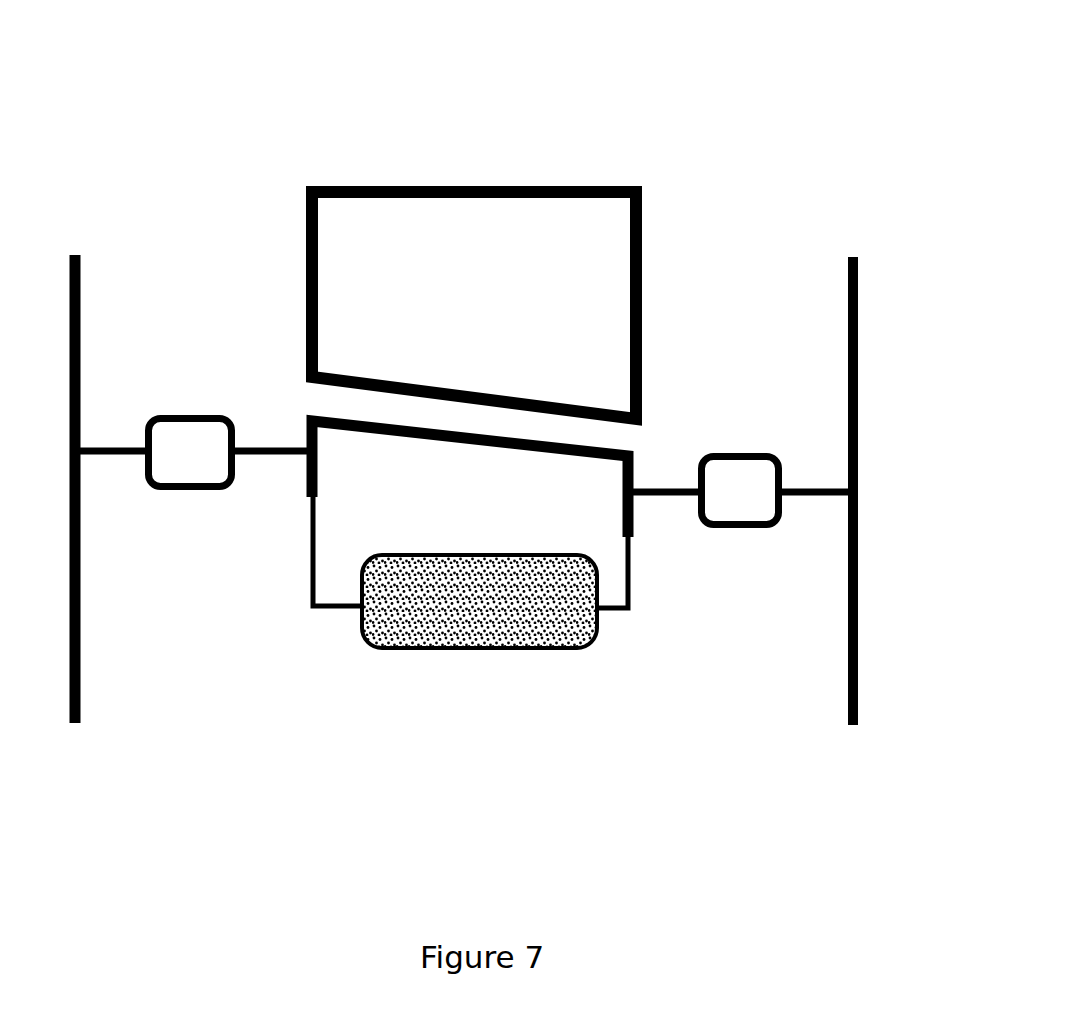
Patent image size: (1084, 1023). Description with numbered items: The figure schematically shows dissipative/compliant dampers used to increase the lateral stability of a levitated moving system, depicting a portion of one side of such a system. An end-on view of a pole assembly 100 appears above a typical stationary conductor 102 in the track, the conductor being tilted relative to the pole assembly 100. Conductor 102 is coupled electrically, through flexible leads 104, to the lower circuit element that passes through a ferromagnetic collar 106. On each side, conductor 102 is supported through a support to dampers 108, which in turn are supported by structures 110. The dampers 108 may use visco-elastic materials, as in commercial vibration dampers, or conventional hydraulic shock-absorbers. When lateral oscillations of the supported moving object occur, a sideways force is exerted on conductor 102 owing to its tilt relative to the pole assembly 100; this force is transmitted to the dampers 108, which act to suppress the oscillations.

The pole assembly 100 is at (478, 185).
The stationary conductor 102 is at (417, 422).
The flexible leads 104 is at (303, 550).
The ferromagnetic collar 106 is at (435, 662).
The dampers 108 is at (192, 405).
The structures 110 is at (85, 682).